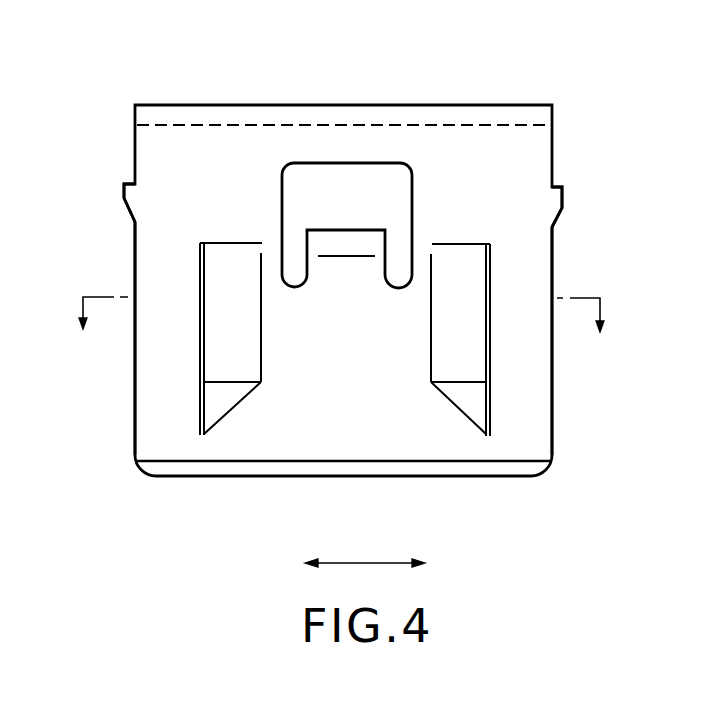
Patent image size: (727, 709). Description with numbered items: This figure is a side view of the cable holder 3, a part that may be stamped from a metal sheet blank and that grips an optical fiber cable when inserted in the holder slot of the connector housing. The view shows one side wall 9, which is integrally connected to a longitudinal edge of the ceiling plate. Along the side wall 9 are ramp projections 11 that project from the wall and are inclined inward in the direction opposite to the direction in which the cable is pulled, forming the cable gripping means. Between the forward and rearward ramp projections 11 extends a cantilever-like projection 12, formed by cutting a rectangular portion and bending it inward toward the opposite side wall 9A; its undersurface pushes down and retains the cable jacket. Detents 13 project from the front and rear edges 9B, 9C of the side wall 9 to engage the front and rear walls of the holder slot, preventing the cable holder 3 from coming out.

The cable holder 3 is at (110, 98).
The side wall 9 is at (537, 153).
The opposite side wall 9A is at (527, 238).
The front edge of side wall 9B is at (135, 253).
The rear edge of side wall 9C is at (530, 273).
The ramp projection 11 is at (467, 265).
The cantilever-like projection 12 is at (342, 233).
The detent 13 is at (122, 190).